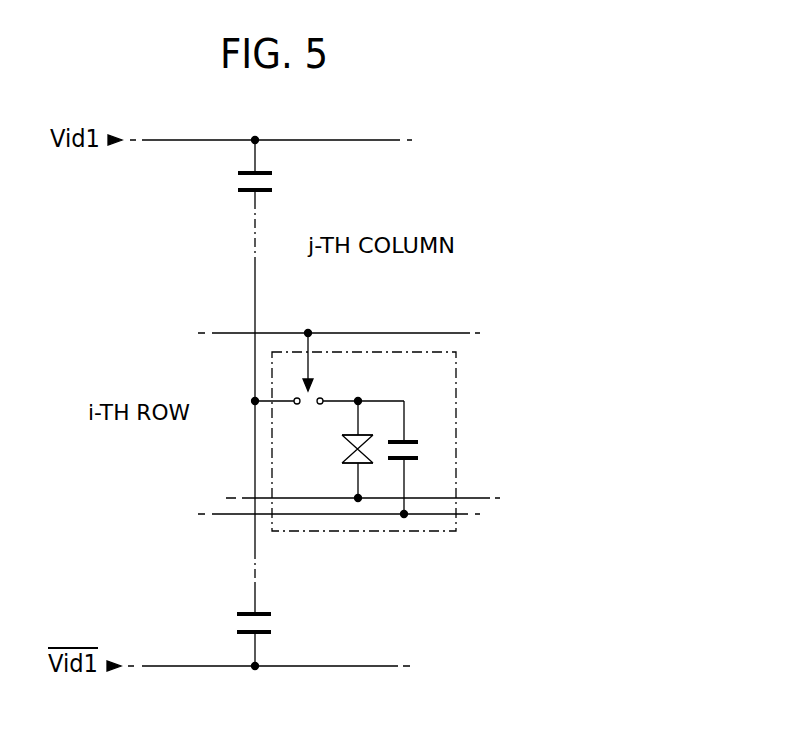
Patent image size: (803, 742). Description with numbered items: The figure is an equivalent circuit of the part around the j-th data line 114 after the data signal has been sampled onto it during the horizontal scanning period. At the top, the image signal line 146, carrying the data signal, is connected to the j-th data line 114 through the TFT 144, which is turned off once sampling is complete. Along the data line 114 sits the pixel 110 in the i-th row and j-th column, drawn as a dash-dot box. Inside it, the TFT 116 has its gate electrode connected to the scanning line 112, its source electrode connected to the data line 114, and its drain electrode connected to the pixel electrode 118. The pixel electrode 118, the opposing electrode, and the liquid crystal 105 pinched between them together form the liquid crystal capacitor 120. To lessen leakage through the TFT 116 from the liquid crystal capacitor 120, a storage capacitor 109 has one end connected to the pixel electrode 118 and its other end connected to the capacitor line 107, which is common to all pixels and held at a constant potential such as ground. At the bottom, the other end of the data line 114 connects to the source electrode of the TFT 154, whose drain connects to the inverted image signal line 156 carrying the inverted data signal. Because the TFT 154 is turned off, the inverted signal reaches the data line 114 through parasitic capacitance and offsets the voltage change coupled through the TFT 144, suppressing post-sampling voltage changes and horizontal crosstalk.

The liquid crystal 105 is at (352, 453).
The capacitor line 107 is at (220, 514).
The storage capacitor 109 is at (417, 451).
The pixel 110 is at (414, 352).
The scanning line 112 is at (240, 334).
The data line 114 is at (284, 301).
The TFT 116 is at (317, 391).
The pixel electrode 118 is at (350, 435).
The liquid crystal capacitor 120 is at (344, 460).
The TFT 144 is at (272, 176).
The image signal line 146 is at (228, 141).
The TFT 154 is at (272, 617).
The inverted image signal line 156 is at (226, 665).